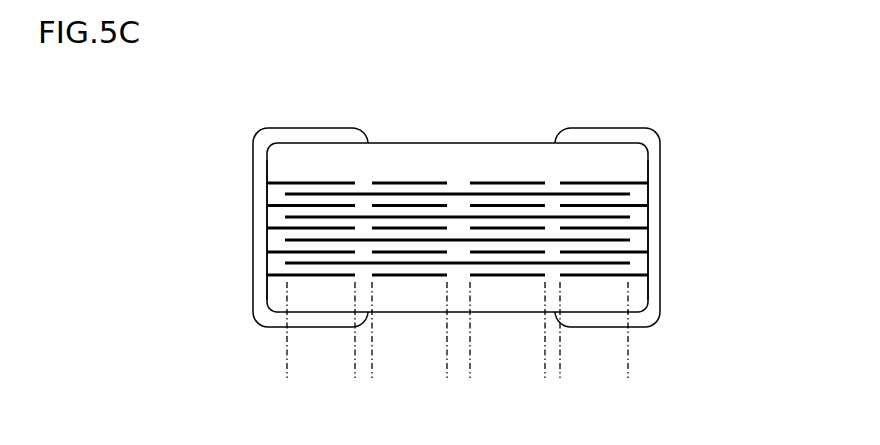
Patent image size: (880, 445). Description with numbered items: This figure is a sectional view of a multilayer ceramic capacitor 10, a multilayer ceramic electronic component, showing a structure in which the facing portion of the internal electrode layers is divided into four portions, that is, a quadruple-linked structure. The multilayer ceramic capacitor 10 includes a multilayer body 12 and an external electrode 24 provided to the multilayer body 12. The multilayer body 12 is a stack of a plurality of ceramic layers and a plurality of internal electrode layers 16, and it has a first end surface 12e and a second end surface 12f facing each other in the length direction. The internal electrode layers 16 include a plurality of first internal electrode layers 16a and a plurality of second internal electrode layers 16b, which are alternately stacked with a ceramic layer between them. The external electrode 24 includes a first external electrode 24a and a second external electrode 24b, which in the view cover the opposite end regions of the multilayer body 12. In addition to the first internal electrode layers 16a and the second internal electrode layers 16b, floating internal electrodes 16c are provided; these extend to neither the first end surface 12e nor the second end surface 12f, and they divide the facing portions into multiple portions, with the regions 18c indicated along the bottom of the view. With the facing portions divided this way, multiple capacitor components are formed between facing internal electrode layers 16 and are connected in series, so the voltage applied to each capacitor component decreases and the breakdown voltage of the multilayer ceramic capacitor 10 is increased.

The multilayer ceramic capacitor 10 is at (263, 116).
The multilayer body 12 is at (429, 141).
The first end surface 12e is at (263, 243).
The second end surface 12f is at (650, 250).
The internal electrode layer 16 is at (458, 200).
The first internal electrode layer 16a is at (277, 226).
The second internal electrode layer 16b is at (641, 184).
The floating internal electrode 16c is at (600, 170).
The external electrode width region 18c is at (628, 370).
The external electrode 24 is at (454, 227).
The first external electrode 24a is at (252, 221).
The second external electrode 24b is at (662, 221).